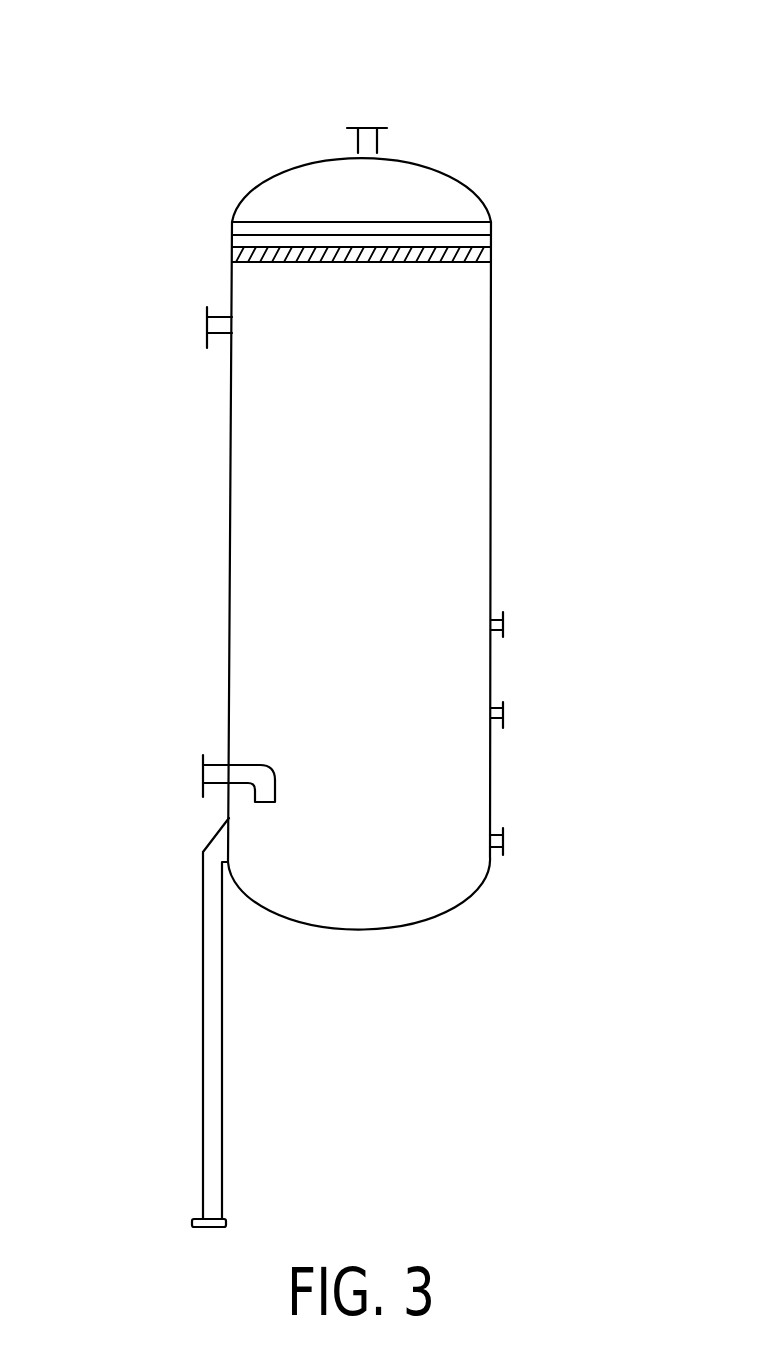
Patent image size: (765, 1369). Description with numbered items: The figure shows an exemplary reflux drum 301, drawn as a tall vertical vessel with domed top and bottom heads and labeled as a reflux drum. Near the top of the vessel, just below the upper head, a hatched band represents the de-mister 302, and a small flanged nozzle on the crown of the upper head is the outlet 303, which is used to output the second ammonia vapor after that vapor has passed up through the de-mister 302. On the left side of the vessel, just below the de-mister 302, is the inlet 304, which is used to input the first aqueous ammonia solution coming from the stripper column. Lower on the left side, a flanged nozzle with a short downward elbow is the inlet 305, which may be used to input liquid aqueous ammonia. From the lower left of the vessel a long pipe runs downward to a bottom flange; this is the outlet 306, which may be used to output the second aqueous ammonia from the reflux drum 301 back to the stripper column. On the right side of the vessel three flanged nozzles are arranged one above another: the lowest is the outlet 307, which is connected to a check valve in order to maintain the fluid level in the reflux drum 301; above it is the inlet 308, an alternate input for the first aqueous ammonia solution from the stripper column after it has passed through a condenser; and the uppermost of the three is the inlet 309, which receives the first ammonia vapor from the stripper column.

The reflux drum 301 is at (493, 445).
The de-mister 302 is at (493, 256).
The outlet 303 is at (365, 128).
The inlet 304 is at (207, 328).
The inlet 305 is at (195, 782).
The outlet 306 is at (193, 882).
The outlet 307 is at (503, 840).
The inlet 308 is at (503, 715).
The inlet 309 is at (503, 623).